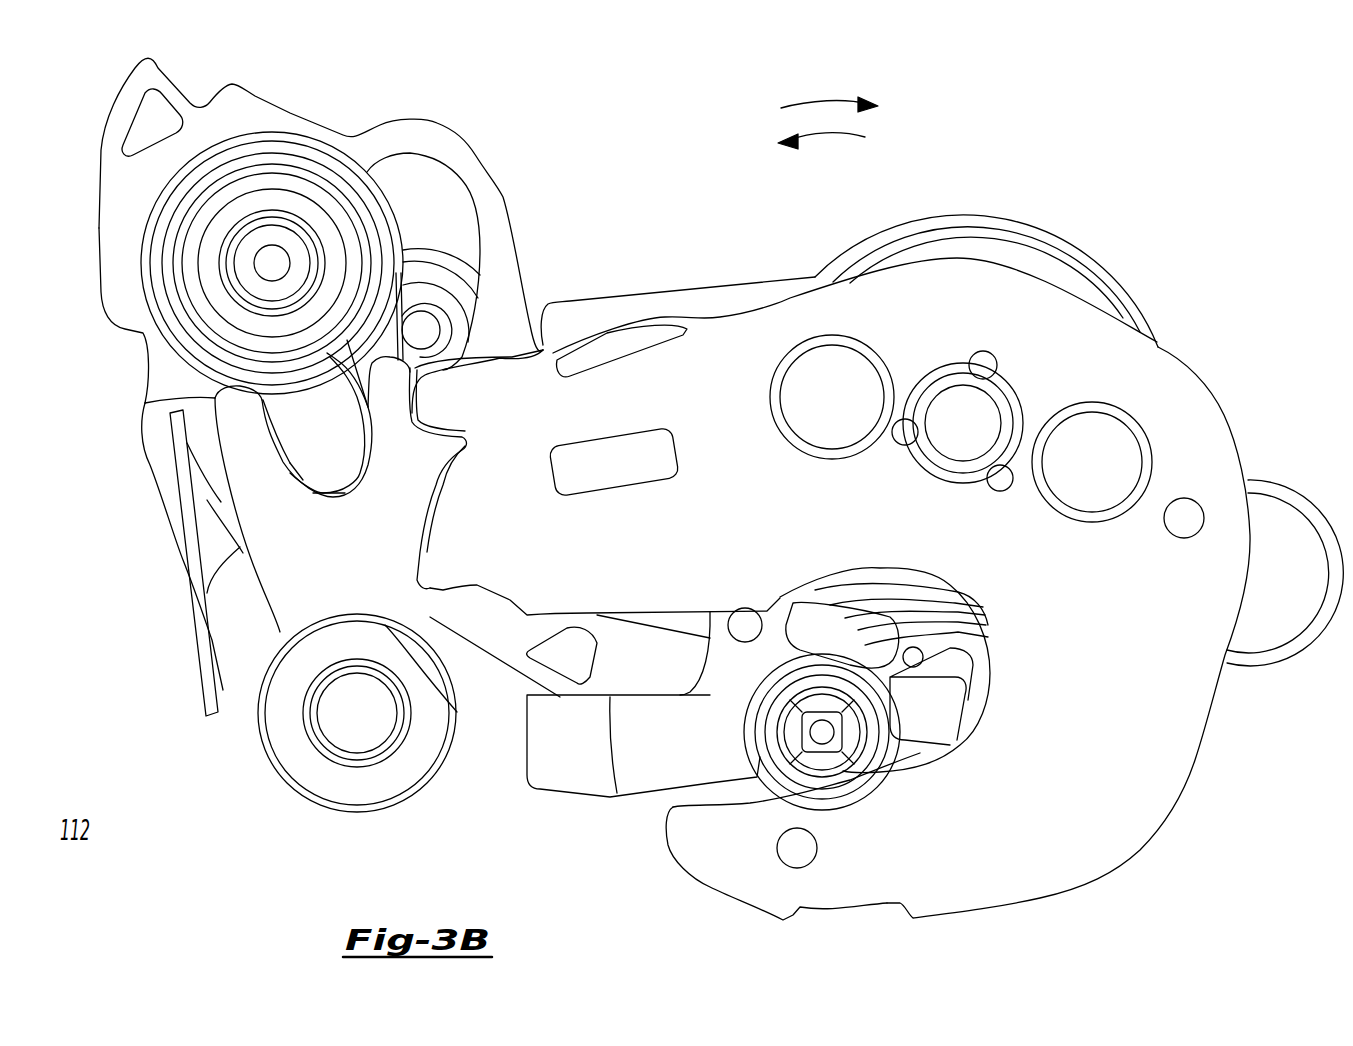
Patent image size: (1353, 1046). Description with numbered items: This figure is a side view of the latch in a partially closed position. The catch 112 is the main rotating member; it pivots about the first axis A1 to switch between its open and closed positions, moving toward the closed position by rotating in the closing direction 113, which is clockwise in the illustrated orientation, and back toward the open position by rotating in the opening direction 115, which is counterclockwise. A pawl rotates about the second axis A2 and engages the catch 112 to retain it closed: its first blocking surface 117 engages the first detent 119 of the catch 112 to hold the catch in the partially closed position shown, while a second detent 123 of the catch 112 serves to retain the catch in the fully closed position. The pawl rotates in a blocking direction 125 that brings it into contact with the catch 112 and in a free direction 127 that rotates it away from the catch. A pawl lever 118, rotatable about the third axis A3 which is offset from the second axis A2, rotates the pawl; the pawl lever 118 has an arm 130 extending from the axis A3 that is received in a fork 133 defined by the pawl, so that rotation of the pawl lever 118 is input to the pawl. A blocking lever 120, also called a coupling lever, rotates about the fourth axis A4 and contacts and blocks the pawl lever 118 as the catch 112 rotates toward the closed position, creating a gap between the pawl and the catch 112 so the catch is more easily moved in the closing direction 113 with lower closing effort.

The catch 112 is at (1000, 832).
The closing direction 113 is at (822, 100).
The opening direction 115 is at (830, 130).
The first blocking surface 117 is at (445, 430).
The pawl lever 118 is at (297, 397).
The first detent 119 is at (445, 430).
The blocking lever 120 is at (565, 768).
The second detent 123 is at (463, 590).
The blocking direction 125 is at (388, 535).
The free direction 127 is at (288, 580).
The arm 130 is at (334, 453).
The fork 133 is at (243, 447).
The first axis A1 is at (963, 423).
The second axis A2 is at (357, 713).
The third axis A3 is at (272, 265).
The fourth axis A4 is at (822, 732).